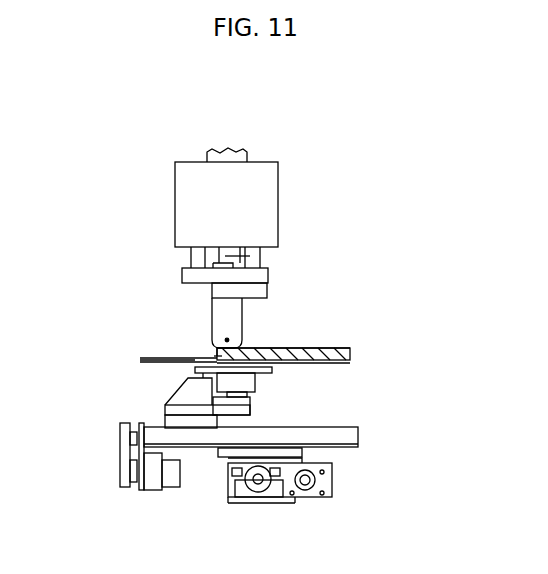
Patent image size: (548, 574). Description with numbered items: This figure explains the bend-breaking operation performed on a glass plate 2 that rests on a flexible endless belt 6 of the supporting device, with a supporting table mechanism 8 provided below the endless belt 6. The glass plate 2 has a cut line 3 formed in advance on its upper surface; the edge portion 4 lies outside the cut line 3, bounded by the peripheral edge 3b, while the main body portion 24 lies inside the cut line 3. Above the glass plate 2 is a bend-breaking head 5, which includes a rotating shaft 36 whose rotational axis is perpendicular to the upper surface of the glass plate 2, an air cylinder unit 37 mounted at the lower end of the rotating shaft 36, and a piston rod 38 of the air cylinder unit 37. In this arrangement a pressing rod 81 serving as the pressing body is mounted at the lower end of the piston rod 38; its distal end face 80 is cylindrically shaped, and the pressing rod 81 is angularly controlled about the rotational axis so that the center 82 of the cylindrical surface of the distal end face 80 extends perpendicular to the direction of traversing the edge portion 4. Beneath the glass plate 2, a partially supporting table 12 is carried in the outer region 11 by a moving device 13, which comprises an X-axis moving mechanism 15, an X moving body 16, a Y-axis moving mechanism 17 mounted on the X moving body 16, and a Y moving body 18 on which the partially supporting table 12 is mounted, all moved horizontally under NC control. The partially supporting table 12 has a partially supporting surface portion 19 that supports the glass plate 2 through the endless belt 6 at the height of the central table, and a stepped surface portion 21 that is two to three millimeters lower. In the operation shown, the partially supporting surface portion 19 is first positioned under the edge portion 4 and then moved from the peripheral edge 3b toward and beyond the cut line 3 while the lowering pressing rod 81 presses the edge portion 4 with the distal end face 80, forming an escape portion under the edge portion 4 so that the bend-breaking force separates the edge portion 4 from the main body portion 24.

The glass plate 2 is at (327, 347).
The cut line 3 is at (243, 348).
The peripheral edge 3b is at (216, 356).
The edge portion 4 is at (163, 359).
The bend-breaking head 5 is at (182, 268).
The endless belt 6 is at (158, 362).
The supporting table mechanism 8 is at (155, 377).
The outer region 11 is at (368, 405).
The partially supporting table 12 is at (272, 408).
The moving device 13 is at (244, 440).
The X-axis moving mechanism 15 is at (281, 466).
The X moving body 16 is at (246, 448).
The Y-axis moving mechanism 17 is at (338, 440).
The Y moving body 18 is at (182, 422).
The partially supporting surface portion 19 is at (262, 373).
The stepped surface portion 21 is at (205, 372).
The main body portion 24 is at (342, 355).
The rotating shaft 36 is at (237, 156).
The air cylinder unit 37 is at (262, 207).
The piston rod 38 is at (250, 256).
The distal end face 80 is at (250, 347).
The pressing rod 81 is at (226, 339).
The center of the cylindrical surface 82 is at (212, 353).